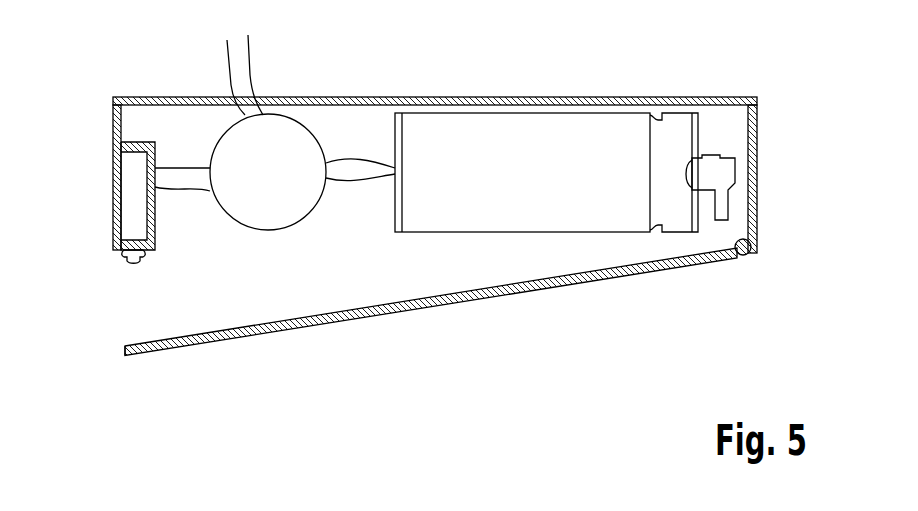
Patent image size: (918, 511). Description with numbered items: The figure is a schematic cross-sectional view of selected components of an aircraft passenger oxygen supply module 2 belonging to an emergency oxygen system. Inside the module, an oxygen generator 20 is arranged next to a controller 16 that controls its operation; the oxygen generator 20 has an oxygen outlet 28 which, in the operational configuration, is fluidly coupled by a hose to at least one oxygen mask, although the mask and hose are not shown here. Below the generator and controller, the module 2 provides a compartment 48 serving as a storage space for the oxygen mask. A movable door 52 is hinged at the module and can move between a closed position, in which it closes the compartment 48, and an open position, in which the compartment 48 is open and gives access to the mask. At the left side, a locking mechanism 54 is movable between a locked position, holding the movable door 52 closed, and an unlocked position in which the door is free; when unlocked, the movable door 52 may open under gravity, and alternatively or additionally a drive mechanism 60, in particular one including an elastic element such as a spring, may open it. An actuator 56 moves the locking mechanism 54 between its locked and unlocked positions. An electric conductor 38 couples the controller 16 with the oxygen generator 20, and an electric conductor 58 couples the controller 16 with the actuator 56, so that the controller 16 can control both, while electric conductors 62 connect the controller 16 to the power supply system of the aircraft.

The aircraft passenger oxygen supply module 2 is at (748, 80).
The controller 16 is at (285, 128).
The oxygen generator 20 is at (553, 133).
The oxygen outlet 28 is at (736, 152).
The electric conductor 38 is at (362, 153).
The compartment 48 is at (118, 337).
The movable door 52 is at (370, 323).
The locking mechanism 54 is at (122, 268).
The actuator 56 is at (128, 210).
The electric conductor 58 is at (178, 153).
The drive mechanism 60 is at (747, 256).
The electric conductors 62 is at (222, 60).